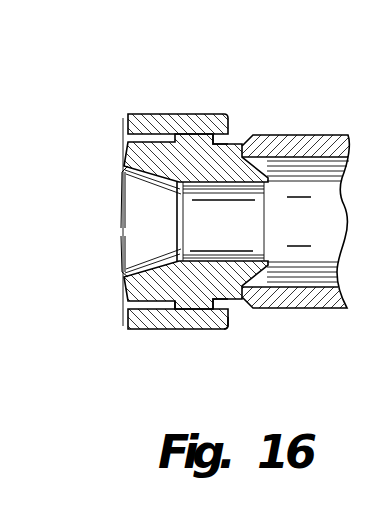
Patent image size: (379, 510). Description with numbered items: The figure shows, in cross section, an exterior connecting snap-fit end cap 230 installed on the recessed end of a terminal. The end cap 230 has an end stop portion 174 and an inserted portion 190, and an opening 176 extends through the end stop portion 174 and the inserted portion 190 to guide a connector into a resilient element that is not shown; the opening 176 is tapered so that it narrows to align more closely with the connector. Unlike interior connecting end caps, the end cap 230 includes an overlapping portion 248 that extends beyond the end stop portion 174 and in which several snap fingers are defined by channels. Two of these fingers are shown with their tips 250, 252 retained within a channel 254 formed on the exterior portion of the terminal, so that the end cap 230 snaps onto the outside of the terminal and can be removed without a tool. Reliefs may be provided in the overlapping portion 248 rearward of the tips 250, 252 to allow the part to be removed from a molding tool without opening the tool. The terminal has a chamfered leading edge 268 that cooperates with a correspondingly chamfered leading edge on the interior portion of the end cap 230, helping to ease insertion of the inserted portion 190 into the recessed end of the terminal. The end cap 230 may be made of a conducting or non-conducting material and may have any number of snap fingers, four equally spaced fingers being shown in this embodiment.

The exterior connecting snap-fit end cap 230 is at (262, 62).
The overlapping portion 248 is at (172, 115).
The finger tip 250 is at (231, 135).
The inserted portion 190 is at (234, 165).
The end stop portion 174 is at (166, 150).
The opening 176 is at (149, 232).
The chamfered leading edge 268 is at (184, 306).
The finger tip 252 is at (223, 328).
The channel 254 is at (237, 306).